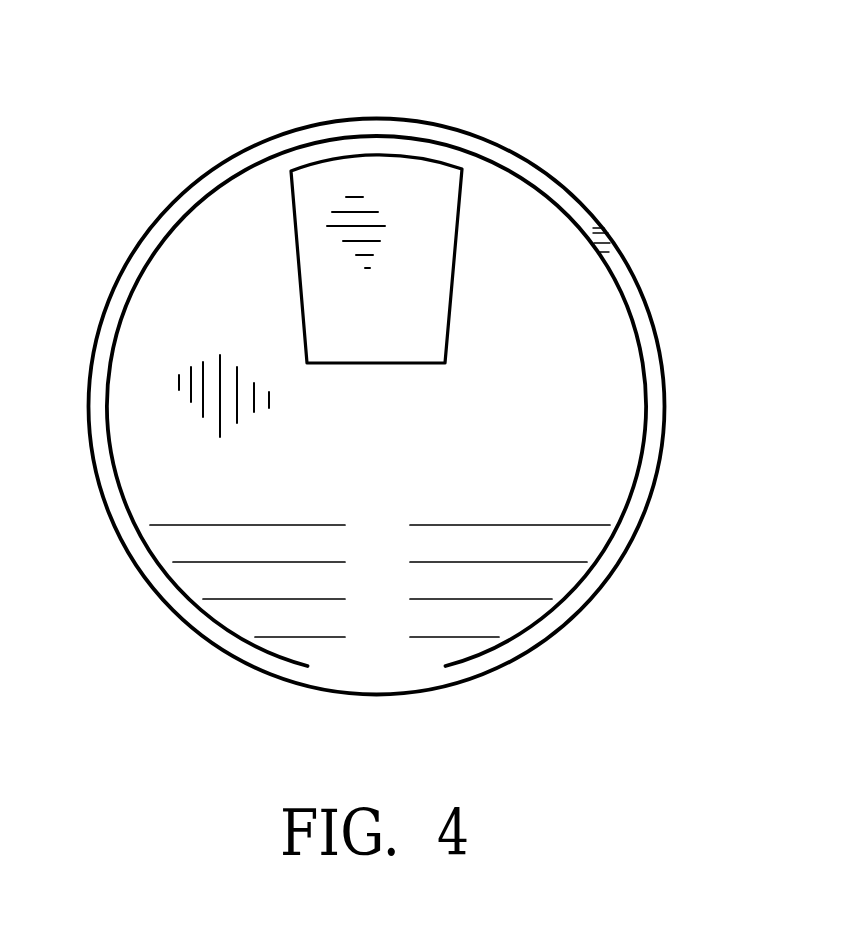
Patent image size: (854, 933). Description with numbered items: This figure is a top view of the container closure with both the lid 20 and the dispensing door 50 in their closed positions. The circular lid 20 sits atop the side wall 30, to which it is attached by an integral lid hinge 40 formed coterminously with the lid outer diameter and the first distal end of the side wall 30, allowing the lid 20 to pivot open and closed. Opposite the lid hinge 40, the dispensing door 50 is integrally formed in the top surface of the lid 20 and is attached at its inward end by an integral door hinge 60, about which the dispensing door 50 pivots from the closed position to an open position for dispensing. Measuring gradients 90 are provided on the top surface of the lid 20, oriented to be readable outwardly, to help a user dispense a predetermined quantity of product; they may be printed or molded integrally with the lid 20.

The lid 20 is at (198, 264).
The side wall 30 is at (652, 408).
The lid hinge 40 is at (267, 764).
The dispensing door 50 is at (425, 225).
The door hinge 60 is at (410, 366).
The measuring gradients 90 is at (232, 598).